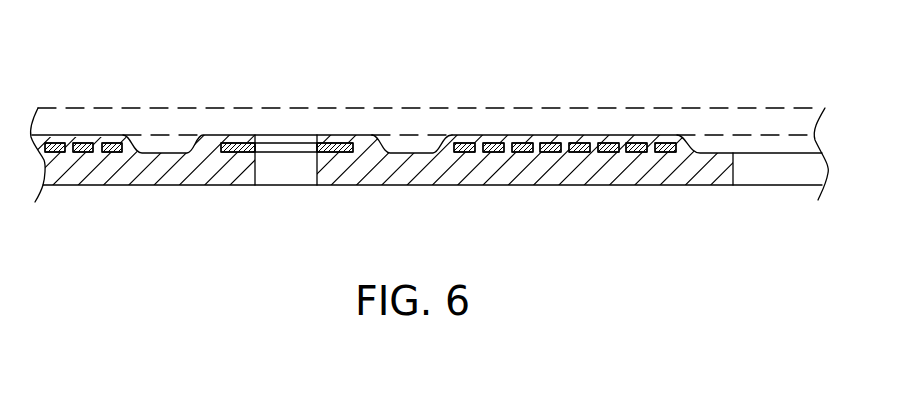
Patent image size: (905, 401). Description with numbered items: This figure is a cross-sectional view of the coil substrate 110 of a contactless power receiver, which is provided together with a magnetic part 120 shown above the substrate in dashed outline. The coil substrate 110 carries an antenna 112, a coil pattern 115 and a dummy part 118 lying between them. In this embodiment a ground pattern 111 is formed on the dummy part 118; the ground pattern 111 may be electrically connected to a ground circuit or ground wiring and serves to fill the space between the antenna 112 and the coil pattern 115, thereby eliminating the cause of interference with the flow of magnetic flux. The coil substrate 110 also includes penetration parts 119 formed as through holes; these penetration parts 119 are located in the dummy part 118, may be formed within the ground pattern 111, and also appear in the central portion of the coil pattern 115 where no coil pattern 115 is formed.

The coil substrate 110 is at (708, 190).
The ground pattern 111 is at (335, 148).
The antenna 112 is at (83, 143).
The coil pattern 115 is at (543, 152).
The dummy part 118 is at (377, 150).
The penetration parts 119 is at (293, 168).
The magnetic part 120 is at (607, 97).